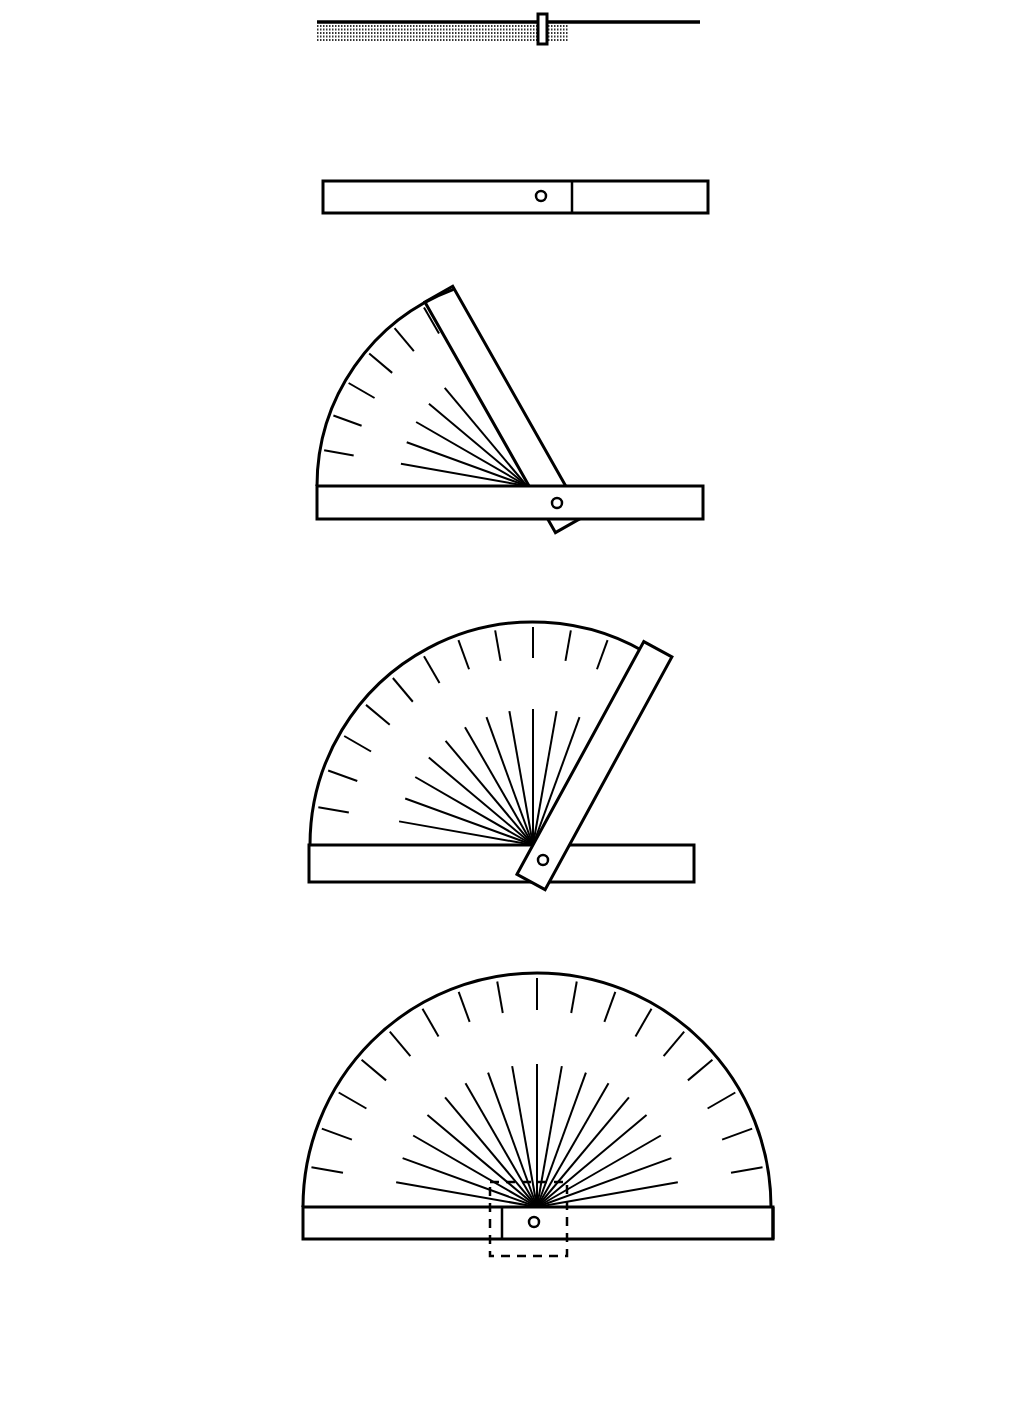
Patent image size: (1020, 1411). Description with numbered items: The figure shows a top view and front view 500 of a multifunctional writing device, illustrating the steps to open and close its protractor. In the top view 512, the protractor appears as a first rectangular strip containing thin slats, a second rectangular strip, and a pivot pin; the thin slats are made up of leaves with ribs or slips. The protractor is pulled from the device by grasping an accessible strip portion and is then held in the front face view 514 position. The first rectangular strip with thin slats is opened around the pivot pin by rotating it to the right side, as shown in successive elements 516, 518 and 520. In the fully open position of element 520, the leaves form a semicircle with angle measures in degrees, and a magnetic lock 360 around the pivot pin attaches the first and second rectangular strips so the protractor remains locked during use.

The top view and front view 500 is at (123, 1228).
The magnetic lock 360 is at (486, 1256).
The top view 512 is at (492, 80).
The front face view 514 is at (492, 253).
The element 516 is at (492, 563).
The element 518 is at (485, 918).
The element 520 is at (505, 1298).